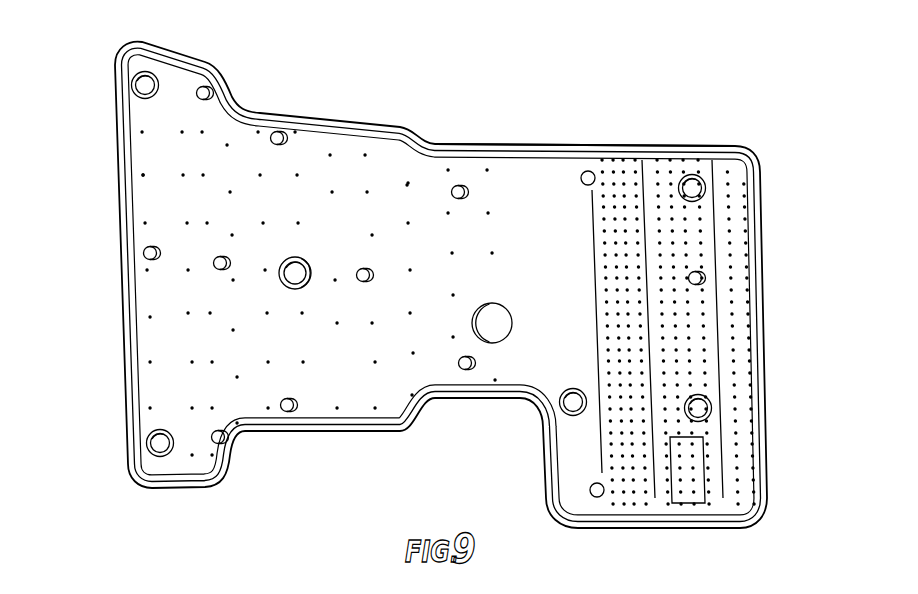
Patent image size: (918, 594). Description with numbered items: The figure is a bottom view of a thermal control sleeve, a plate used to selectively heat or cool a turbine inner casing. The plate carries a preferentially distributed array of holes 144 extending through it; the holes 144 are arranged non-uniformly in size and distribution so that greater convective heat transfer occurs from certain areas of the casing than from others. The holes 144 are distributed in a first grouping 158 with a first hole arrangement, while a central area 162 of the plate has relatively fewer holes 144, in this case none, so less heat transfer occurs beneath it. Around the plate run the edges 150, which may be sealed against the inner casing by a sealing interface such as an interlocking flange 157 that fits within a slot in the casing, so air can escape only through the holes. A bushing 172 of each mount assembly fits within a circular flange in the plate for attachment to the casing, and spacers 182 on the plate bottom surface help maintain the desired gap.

The holes 144 is at (150, 317).
The edges 150 is at (543, 142).
The interlocking flange 157 is at (121, 285).
The first grouping 158 is at (143, 175).
The central area 162 is at (430, 173).
The bushing 172 is at (138, 90).
The spacers 182 is at (592, 172).